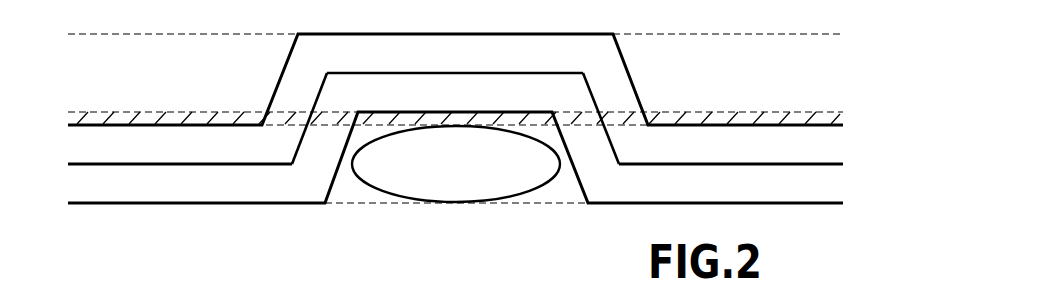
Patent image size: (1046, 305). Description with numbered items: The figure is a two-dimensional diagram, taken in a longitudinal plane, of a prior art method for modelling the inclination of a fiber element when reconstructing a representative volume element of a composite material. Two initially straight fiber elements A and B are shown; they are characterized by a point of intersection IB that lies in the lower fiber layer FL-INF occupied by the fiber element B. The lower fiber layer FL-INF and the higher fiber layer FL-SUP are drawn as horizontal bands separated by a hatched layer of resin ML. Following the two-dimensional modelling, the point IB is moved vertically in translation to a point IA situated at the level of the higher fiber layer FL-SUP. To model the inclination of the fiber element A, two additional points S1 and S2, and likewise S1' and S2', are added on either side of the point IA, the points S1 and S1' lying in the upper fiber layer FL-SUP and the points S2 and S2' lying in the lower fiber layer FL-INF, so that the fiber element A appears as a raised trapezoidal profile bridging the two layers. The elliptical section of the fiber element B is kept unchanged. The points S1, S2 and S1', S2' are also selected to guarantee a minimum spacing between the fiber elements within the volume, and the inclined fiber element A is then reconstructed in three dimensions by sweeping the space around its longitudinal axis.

The fiber element A is at (618, 68).
The fiber element B is at (545, 187).
The additional point S1 is at (316, 104).
The additional point S1' is at (594, 104).
The additional point S2 is at (296, 178).
The additional point S2' is at (623, 178).
The point IA is at (455, 60).
The point of intersection IB is at (457, 152).
The higher fiber layer FL-SUP is at (833, 68).
The layer of resin ML is at (835, 118).
The fiber layer FL-INF is at (833, 144).